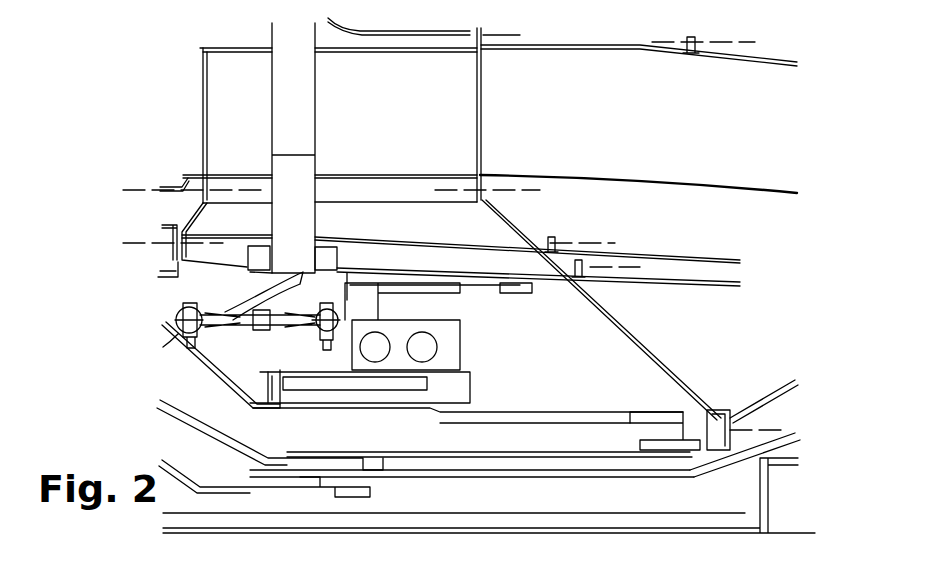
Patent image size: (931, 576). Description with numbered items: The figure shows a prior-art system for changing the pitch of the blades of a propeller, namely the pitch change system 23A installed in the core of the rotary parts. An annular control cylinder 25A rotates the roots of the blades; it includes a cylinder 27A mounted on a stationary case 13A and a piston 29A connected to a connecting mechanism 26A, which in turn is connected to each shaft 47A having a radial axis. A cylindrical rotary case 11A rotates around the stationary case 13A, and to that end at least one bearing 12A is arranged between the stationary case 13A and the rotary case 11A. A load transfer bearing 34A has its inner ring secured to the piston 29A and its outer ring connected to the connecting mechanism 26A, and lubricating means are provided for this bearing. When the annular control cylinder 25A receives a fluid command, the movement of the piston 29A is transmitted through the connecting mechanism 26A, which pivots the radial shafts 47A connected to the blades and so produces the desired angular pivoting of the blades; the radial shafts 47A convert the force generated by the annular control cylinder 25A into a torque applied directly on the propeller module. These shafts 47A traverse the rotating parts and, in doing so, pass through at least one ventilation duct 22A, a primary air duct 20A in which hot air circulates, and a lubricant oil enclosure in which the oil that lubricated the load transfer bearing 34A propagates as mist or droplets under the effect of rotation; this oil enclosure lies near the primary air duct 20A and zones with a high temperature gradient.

The cylindrical rotary case 11A is at (767, 405).
The bearing 12A is at (647, 440).
The stationary case 13A is at (297, 407).
The primary air duct 20A is at (642, 115).
The ventilation duct 22A is at (497, 258).
The pitch change system 23A is at (236, 367).
The annular control cylinder 25A is at (518, 360).
The connecting mechanism 26A is at (216, 292).
The cylinder 27A is at (572, 412).
The piston 29A is at (267, 375).
The load transfer bearing 34A is at (395, 392).
The shaft 47A is at (296, 86).